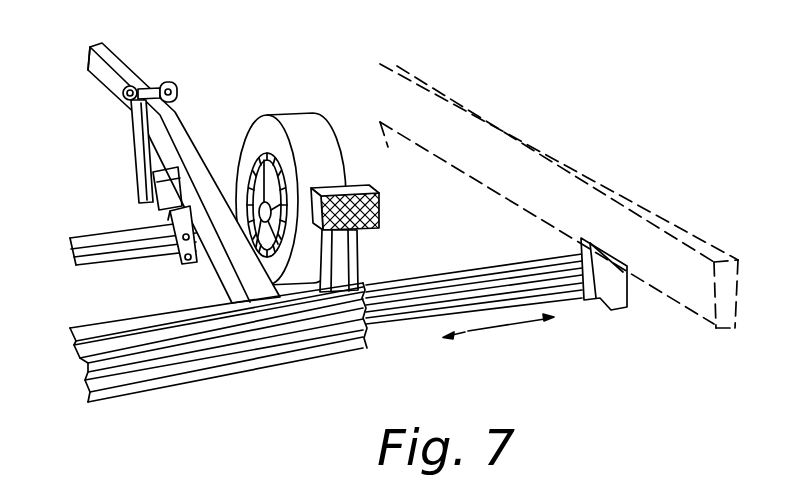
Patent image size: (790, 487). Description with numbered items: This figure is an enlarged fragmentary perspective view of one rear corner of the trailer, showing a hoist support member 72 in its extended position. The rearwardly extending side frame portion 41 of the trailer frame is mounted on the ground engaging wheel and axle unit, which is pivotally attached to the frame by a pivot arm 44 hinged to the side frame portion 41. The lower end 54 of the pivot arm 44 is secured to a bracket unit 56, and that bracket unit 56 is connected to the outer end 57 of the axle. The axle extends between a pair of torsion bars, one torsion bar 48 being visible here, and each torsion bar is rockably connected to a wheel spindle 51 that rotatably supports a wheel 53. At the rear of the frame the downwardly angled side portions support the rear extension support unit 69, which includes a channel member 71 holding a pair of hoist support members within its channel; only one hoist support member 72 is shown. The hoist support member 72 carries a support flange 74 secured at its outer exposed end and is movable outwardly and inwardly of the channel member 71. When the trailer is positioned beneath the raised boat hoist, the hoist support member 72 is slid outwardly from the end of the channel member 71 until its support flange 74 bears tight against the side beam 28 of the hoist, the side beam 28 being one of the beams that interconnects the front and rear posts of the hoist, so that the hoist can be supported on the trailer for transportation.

The side beam 28 is at (587, 210).
The side frame portion 41 is at (121, 73).
The pivot arm 44 is at (134, 146).
The torsion bar 48 is at (226, 135).
The wheel spindle 51 is at (283, 173).
The wheel 53 is at (282, 113).
The lower end of pivot arm 54 is at (168, 205).
The bracket unit 56 is at (201, 263).
The outer end of axle 57 is at (100, 237).
The rear extension support unit 69 is at (326, 346).
The channel member 71 is at (287, 357).
The hoist support member 72 is at (405, 330).
The support flange 74 is at (633, 312).